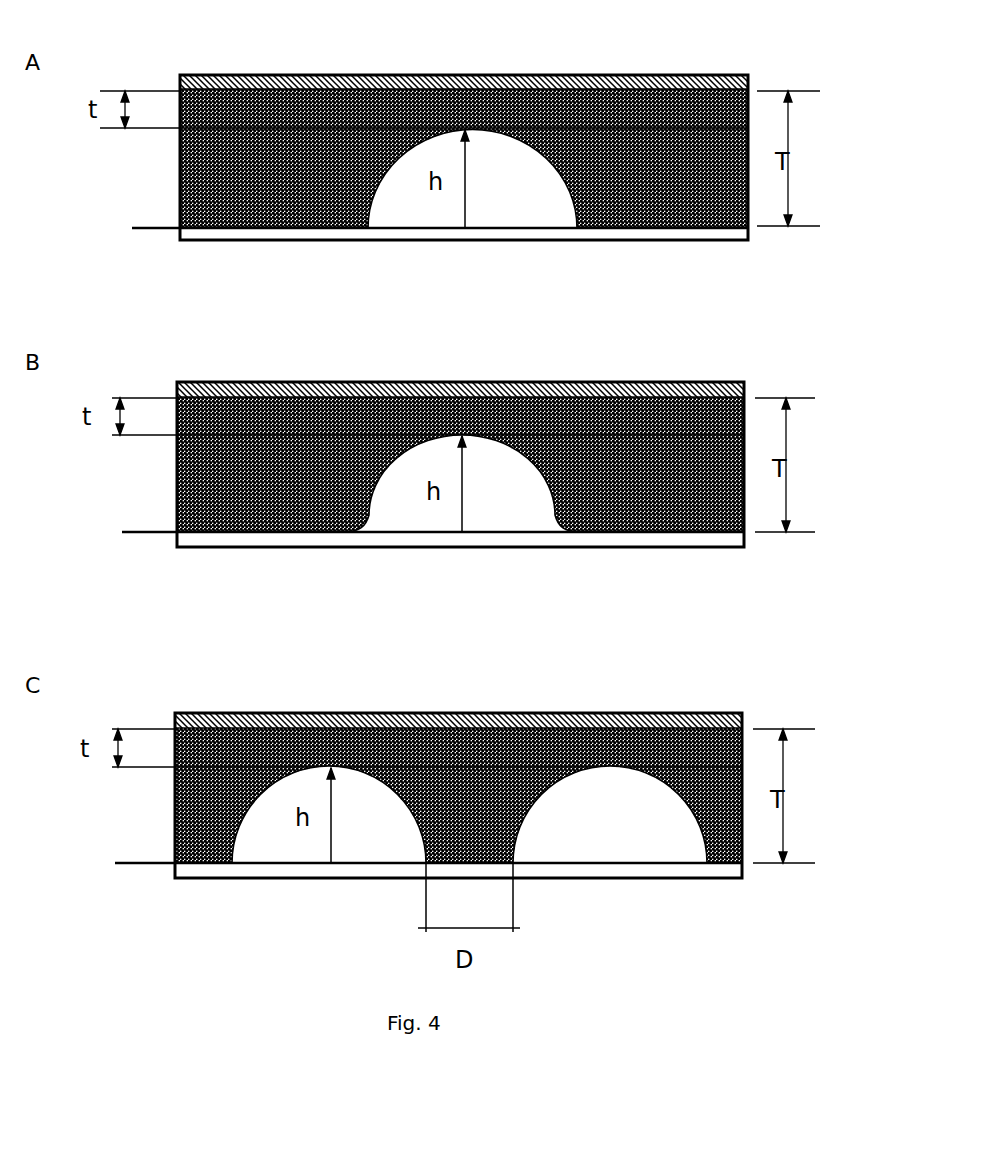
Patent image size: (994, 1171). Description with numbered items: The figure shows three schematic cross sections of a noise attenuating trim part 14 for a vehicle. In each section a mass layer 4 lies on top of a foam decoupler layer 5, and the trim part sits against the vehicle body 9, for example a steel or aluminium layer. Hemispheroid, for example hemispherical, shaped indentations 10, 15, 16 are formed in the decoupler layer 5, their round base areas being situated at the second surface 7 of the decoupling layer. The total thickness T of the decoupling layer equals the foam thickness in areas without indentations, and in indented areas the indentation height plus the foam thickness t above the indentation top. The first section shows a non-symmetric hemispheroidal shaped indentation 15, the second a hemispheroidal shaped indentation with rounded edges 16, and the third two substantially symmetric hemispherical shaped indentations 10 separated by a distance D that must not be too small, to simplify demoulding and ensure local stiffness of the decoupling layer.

In FIG. 4A, the mass layer 4 is at (748, 76).
In FIG. 4B, the mass layer 4 is at (744, 383).
In FIG. 4C, the mass layer 4 is at (742, 714).
In FIG. 4A, the decoupler layer 5 is at (200, 160).
In FIG. 4B, the decoupler layer 5 is at (197, 476).
In FIG. 4C, the decoupler layer 5 is at (197, 805).
In FIG. 4A, the second surface 7 is at (428, 226).
In FIG. 4B, the second surface 7 is at (421, 531).
In FIG. 4C, the second surface 7 is at (417, 863).
In FIG. 4A, the vehicle body 9 is at (205, 236).
In FIG. 4B, the vehicle body 9 is at (208, 541).
In FIG. 4C, the vehicle body 9 is at (200, 873).
In FIG. 4C, the hemispherical shaped indentation 10 is at (355, 848).
In FIG. 4A, the noise attenuating trim part 14 is at (598, 62).
In FIG. 4B, the noise attenuating trim part 14 is at (598, 365).
In FIG. 4C, the noise attenuating trim part 14 is at (565, 700).
In FIG. 4A, the non-symmetric hemispheroidal shaped indentation 15 is at (503, 197).
In FIG. 4B, the hemispheroidal shaped indentation with rounded edges 16 is at (497, 507).